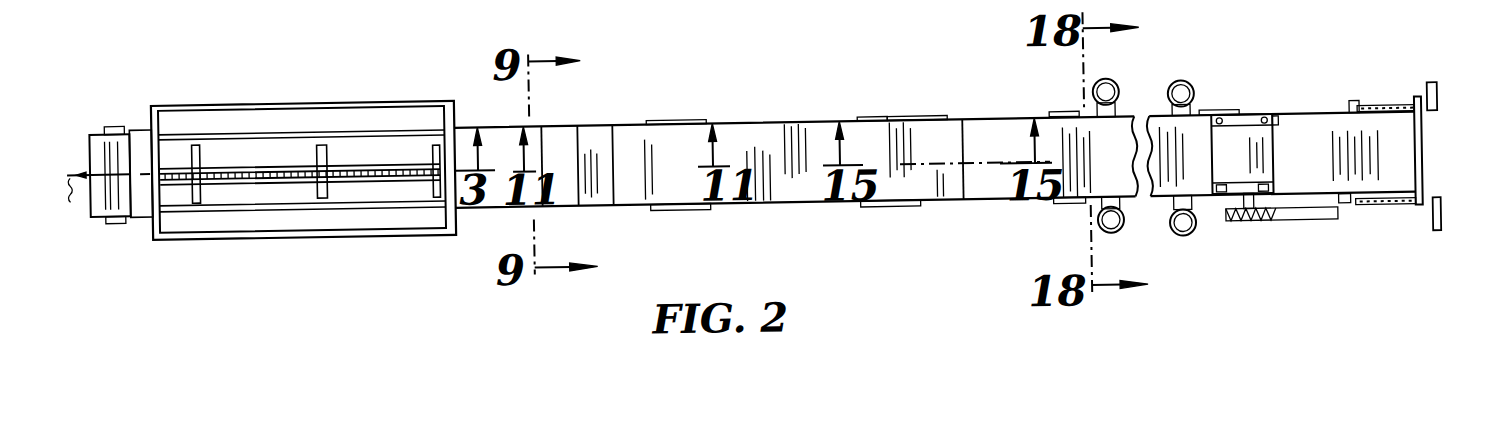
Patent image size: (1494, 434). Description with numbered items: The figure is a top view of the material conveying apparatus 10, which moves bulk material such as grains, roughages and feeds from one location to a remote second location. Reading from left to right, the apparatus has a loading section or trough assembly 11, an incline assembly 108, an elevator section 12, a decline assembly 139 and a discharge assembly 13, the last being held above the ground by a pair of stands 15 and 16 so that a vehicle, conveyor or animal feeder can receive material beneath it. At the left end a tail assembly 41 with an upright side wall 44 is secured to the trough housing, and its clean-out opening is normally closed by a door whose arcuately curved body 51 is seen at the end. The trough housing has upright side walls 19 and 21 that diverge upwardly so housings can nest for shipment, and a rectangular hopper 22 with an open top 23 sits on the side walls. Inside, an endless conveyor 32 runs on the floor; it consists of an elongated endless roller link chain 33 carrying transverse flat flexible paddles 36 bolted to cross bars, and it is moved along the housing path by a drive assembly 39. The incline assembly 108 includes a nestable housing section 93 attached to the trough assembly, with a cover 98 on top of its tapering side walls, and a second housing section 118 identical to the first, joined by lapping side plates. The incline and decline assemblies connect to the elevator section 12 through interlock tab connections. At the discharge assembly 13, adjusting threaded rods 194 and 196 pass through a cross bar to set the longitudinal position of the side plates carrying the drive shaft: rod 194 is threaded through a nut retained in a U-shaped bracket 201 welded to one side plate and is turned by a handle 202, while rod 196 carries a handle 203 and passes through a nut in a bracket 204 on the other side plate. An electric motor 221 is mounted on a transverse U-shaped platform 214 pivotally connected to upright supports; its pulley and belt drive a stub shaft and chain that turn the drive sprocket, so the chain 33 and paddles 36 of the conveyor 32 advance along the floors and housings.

The material conveying apparatus 10 is at (446, 75).
The trough assembly 11 is at (264, 245).
The elevator section 12 is at (765, 133).
The discharge assembly 13 is at (1149, 100).
The stand 15 is at (1116, 230).
The stand 16 is at (1186, 88).
The side wall 19 is at (410, 130).
The side wall 21 is at (406, 194).
The hopper 22 is at (253, 97).
The open top 23 is at (205, 112).
The endless conveyor 32 is at (359, 124).
The roller link chain 33 is at (352, 175).
The paddle 36 is at (320, 136).
The drive assembly 39 is at (1294, 92).
The tail assembly 41 is at (97, 222).
The side wall 44 is at (128, 10).
The arcuately curved body 51 is at (100, 131).
The housing section 93 is at (560, 188).
The cover 98 is at (812, 135).
The incline assembly 108 is at (590, 124).
The housing section 118 is at (665, 138).
The decline assembly 139 is at (938, 112).
The threaded rod 194 is at (1392, 216).
The threaded rod 196 is at (1393, 113).
The U-shaped bracket 201 is at (1350, 213).
The handle 202 is at (1436, 242).
The handle 203 is at (1433, 93).
The bracket 204 is at (1357, 110).
The platform 214 is at (1279, 130).
The electric motor 221 is at (1243, 143).